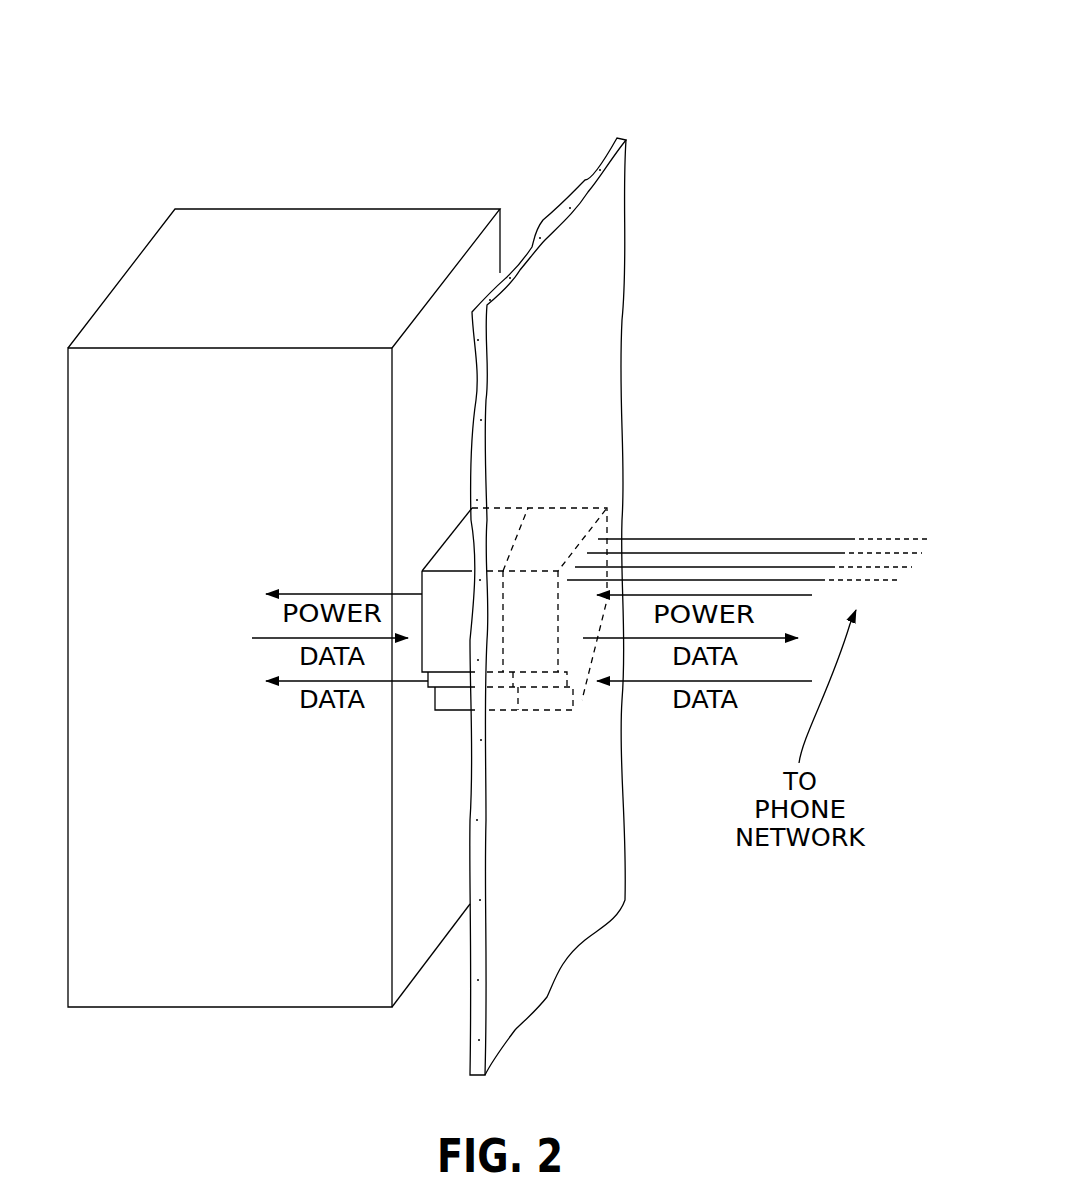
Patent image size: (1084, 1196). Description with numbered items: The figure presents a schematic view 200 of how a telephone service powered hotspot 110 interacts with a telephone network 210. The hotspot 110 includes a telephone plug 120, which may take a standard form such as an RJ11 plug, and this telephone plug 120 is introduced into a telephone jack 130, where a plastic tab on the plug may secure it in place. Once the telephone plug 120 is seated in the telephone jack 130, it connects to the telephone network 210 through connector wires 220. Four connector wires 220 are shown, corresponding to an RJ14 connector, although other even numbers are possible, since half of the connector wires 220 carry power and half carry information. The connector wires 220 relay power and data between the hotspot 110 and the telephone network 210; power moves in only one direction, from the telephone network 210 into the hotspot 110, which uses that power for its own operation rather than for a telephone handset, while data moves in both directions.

The schematic view 200 is at (570, 104).
The telephone service powered hotspot 110 is at (300, 232).
The telephone plug 120 is at (458, 550).
The telephone jack 130 is at (530, 538).
The telephone network 210 is at (598, 235).
The connector wires 220 is at (770, 538).